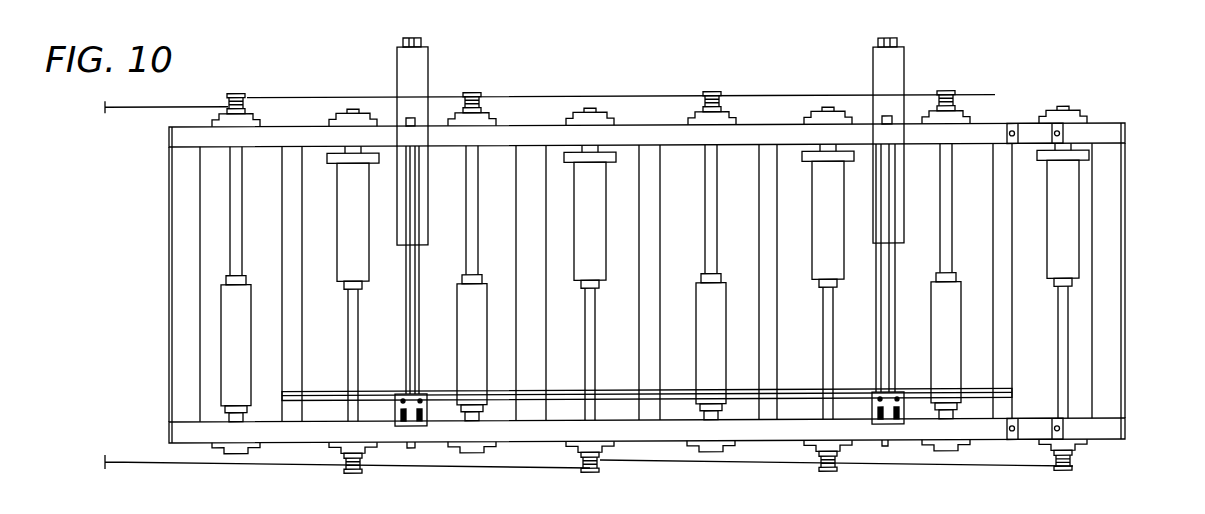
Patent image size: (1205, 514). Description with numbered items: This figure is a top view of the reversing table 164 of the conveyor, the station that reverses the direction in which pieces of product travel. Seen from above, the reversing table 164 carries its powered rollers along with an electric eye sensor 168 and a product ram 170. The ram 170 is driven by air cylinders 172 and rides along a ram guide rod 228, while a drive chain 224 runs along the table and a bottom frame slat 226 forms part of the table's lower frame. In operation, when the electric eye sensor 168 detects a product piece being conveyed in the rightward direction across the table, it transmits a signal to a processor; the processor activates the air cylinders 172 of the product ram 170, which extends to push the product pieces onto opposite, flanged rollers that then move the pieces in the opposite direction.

The reversing table 164 is at (1128, 100).
The electric eye sensing device 168 is at (1028, 130).
The product ram 170 is at (975, 394).
The air cylinder 172 is at (428, 74).
The drive chain 224 is at (307, 97).
The bottom frame slat 226 is at (289, 192).
The ram guide rod 228 is at (884, 165).